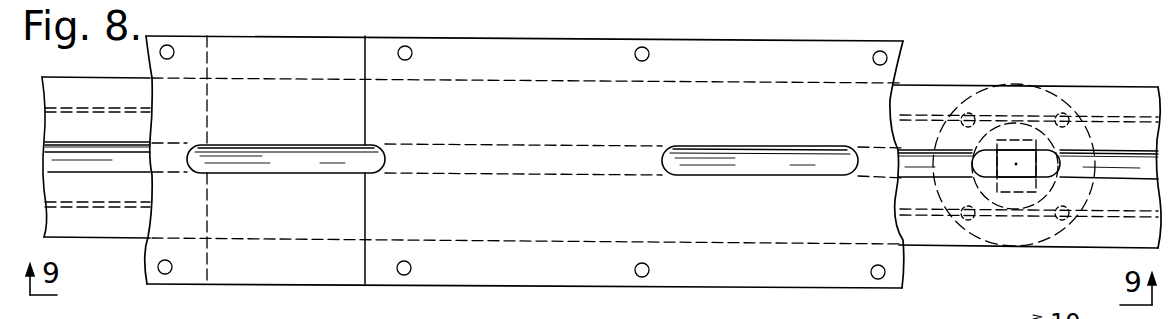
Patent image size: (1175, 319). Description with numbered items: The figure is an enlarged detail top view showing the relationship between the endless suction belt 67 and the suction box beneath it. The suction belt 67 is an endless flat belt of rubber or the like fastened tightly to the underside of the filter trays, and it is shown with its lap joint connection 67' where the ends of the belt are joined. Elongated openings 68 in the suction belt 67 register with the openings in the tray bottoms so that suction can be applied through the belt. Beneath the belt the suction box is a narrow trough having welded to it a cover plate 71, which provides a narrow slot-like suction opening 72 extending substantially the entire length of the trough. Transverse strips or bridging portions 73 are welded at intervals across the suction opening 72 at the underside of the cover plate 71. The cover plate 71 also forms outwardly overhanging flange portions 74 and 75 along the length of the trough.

The suction belt 67 is at (524, 161).
The lap joint connection 67' is at (343, 177).
The openings 68 is at (280, 171).
The cover plate 71 is at (932, 247).
The suction opening 72 is at (1112, 178).
The transverse strips 73 is at (1037, 170).
The flange portion 74 is at (1083, 87).
The flange portion 75 is at (1065, 246).